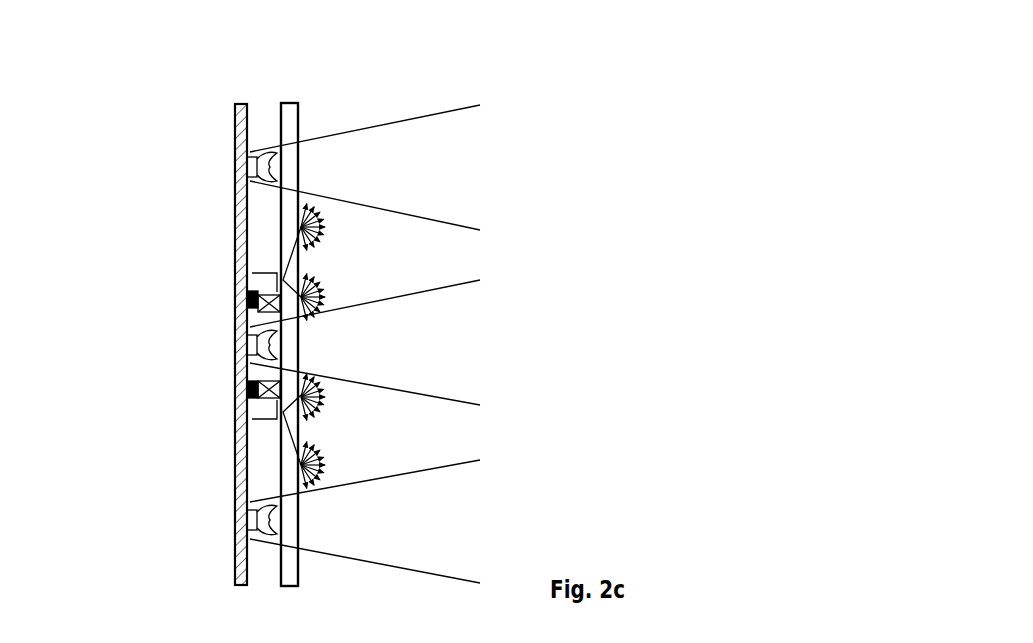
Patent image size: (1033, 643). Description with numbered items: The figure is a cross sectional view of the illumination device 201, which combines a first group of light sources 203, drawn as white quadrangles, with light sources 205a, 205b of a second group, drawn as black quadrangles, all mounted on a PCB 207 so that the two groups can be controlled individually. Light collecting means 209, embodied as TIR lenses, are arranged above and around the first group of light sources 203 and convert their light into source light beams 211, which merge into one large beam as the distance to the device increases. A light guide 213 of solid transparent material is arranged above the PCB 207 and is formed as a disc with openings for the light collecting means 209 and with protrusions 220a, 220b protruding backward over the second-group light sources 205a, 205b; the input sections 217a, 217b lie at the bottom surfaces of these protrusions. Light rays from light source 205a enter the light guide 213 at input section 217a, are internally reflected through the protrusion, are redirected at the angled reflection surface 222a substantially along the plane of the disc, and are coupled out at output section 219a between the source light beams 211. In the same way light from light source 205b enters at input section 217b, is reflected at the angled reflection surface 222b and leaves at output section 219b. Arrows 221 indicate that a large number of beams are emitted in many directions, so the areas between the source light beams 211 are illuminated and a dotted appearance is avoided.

The illumination device 201 is at (552, 46).
The first group of light sources 203 is at (246, 160).
The light source of the second group 205a is at (247, 301).
The light source of the second group 205b is at (247, 386).
The PCB 207 is at (241, 544).
The light collecting means 209 is at (294, 163).
The source light beams 211 is at (392, 344).
The light guide 213 is at (284, 103).
The input section 217a is at (248, 298).
The input section 217b is at (248, 402).
The output section 219a is at (333, 203).
The output section 219b is at (333, 380).
The protrusion 220a is at (274, 284).
The protrusion 220b is at (252, 422).
The arrows 221 is at (322, 228).
The angled reflection surface 222a is at (288, 278).
The angled reflection surface 222b is at (255, 437).